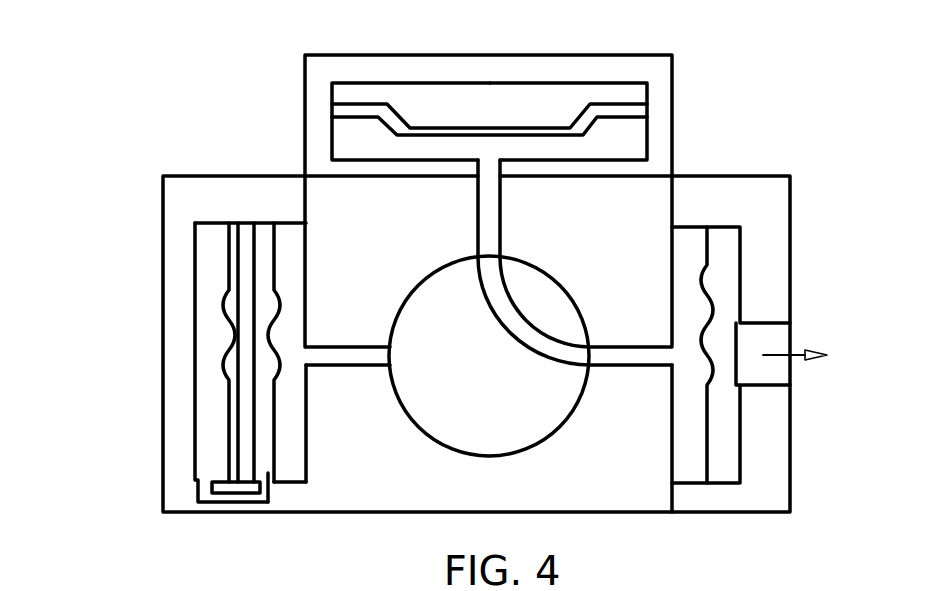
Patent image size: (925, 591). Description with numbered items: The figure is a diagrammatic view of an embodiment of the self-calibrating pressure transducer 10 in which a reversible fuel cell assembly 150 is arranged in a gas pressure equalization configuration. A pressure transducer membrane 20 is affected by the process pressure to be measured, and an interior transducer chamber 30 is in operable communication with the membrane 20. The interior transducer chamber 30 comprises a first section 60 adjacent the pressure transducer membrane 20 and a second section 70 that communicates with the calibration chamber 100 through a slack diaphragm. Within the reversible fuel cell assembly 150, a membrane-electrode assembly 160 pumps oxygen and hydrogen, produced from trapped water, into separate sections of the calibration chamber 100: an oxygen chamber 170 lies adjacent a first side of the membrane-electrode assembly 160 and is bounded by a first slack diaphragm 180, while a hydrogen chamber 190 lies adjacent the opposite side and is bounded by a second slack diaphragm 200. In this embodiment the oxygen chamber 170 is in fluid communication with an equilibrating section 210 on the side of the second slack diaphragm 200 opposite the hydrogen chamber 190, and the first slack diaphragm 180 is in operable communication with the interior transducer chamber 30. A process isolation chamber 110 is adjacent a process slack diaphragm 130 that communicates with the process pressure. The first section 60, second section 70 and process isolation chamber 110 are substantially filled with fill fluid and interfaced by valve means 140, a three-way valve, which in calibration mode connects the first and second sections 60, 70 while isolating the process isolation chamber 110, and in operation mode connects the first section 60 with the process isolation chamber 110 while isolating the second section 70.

The self-calibrating pressure transducer 10 is at (702, 107).
The pressure transducer membrane 20 is at (448, 130).
The interior transducer chamber 30 is at (348, 130).
The first section 60 is at (628, 137).
The second section 70 is at (290, 467).
The calibration chamber 100 is at (235, 473).
The process isolation chamber 110 is at (693, 425).
The process slack diaphragm 130 is at (707, 265).
The valve means 140 is at (553, 277).
The reversible fuel cell assembly 150 is at (162, 290).
The membrane-electrode assembly 160 is at (249, 227).
The oxygen chamber 170 is at (262, 227).
The first slack diaphragm 180 is at (273, 407).
The hydrogen chamber 190 is at (233, 223).
The second slack diaphragm 200 is at (222, 382).
The equilibrating section 210 is at (200, 347).